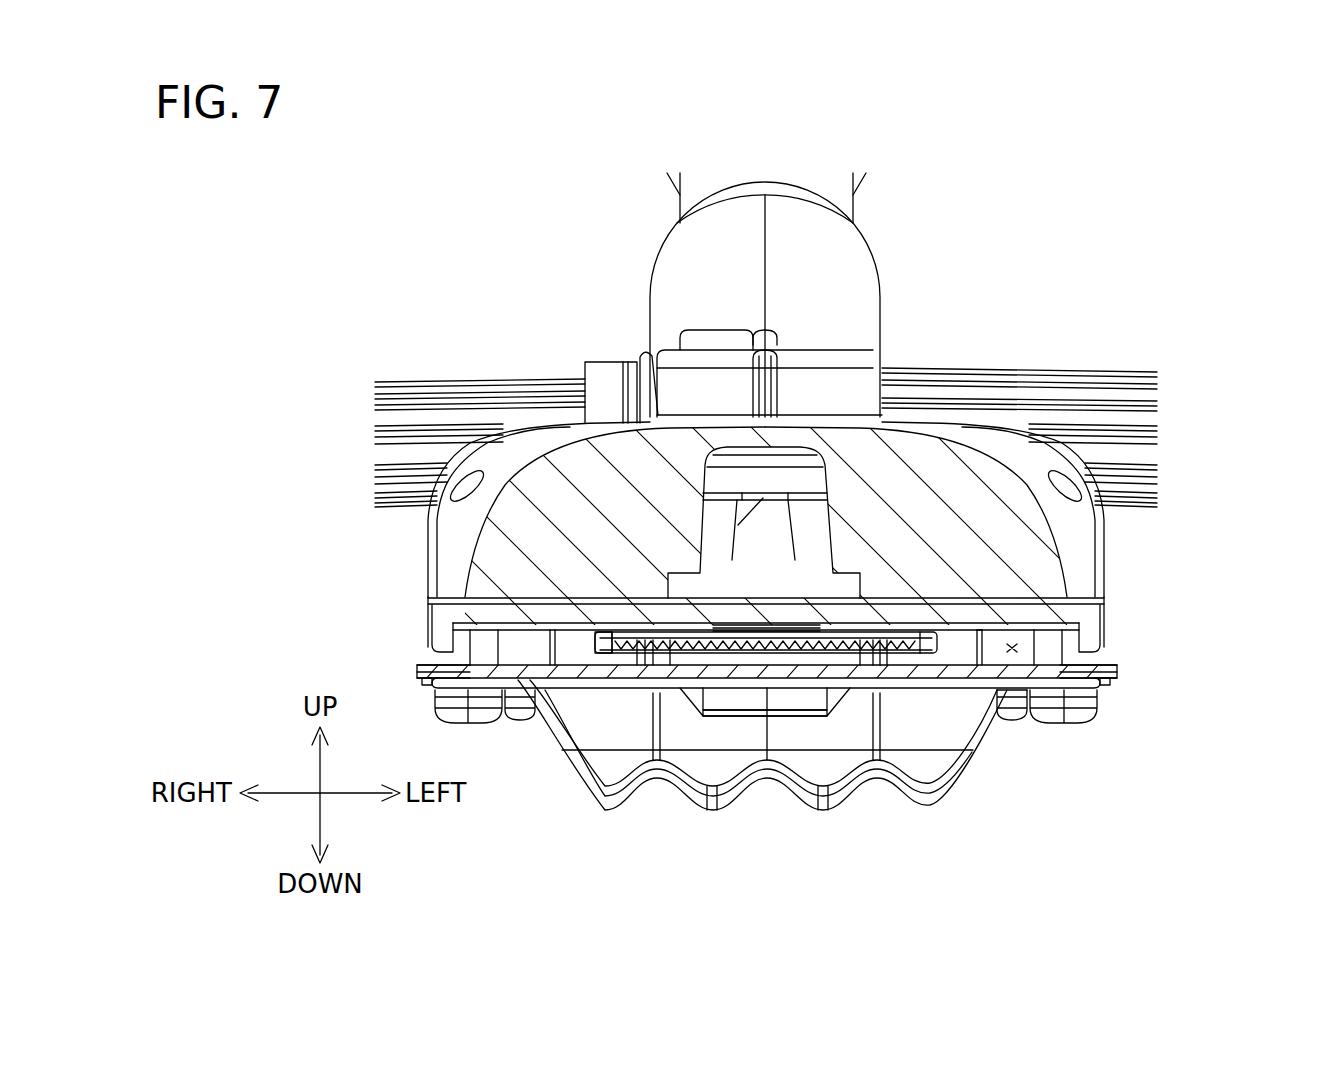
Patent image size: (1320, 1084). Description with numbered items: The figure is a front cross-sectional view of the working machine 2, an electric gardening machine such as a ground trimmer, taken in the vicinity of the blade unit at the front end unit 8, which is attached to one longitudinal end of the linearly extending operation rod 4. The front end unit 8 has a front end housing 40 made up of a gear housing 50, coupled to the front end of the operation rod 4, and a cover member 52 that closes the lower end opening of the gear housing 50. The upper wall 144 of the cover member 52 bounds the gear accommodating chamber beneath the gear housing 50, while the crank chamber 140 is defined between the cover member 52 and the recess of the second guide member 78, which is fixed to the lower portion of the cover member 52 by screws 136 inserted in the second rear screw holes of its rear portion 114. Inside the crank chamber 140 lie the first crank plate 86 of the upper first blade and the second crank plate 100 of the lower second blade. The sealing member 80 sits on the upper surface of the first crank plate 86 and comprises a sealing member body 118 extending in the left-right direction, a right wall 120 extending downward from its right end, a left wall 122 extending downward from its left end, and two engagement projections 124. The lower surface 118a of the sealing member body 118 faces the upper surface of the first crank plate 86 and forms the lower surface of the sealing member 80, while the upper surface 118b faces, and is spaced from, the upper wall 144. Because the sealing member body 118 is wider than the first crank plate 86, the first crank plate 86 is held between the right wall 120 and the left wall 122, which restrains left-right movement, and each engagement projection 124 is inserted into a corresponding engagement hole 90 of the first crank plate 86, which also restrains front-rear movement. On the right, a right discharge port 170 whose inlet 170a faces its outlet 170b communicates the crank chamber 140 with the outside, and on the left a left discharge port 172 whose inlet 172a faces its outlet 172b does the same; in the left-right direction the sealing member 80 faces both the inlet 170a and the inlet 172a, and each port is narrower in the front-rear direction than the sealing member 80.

The working machine 2 is at (1128, 207).
The operation rod 4 is at (680, 200).
The front end unit 8 is at (1153, 697).
The front end housing 40 is at (497, 460).
The gear housing 50 is at (573, 463).
The cover member 52 is at (465, 540).
The second guide member 78 is at (990, 680).
The sealing member 80 is at (870, 690).
The first crank plate 86 is at (800, 700).
The engagement holes 90 is at (600, 775).
The second crank plate 100 is at (716, 700).
The rear portion of second guide member 114 is at (1015, 700).
The sealing member body 118 is at (662, 668).
The lower surface of sealing member body 118a is at (788, 668).
The upper surface of sealing member body 118b is at (975, 600).
The right wall 120 is at (598, 648).
The left wall 122 is at (962, 692).
The engagement projections 124 is at (650, 655).
The screws 136 is at (485, 715).
The crank chamber 140 is at (1012, 646).
The upper wall 144 is at (1000, 605).
The right discharge port 170 is at (408, 660).
The inlet of right discharge port 170a is at (432, 668).
The outlet of right discharge port 170b is at (436, 648).
The left discharge port 172 is at (1125, 660).
The inlet of left discharge port 172a is at (1098, 668).
The outlet of left discharge port 172b is at (1096, 648).